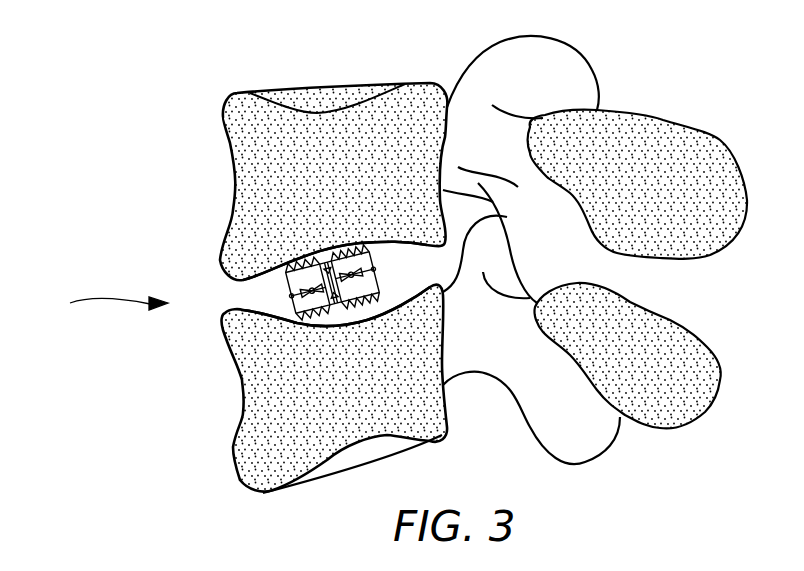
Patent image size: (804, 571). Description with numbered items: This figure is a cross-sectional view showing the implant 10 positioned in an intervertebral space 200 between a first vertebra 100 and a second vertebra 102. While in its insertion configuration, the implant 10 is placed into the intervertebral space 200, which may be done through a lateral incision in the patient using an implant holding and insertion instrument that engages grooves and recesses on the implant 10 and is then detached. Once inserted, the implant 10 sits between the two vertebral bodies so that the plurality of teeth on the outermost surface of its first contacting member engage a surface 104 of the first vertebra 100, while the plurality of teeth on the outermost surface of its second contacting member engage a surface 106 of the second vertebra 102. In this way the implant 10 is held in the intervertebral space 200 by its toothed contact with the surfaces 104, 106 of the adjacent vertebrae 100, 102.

The implant 10 is at (397, 276).
The first vertebra 100 is at (253, 198).
The second vertebra 102 is at (270, 407).
The surface of the first vertebra 104 is at (253, 282).
The surface of the second vertebra 106 is at (258, 306).
The intervertebral space 200 is at (98, 308).